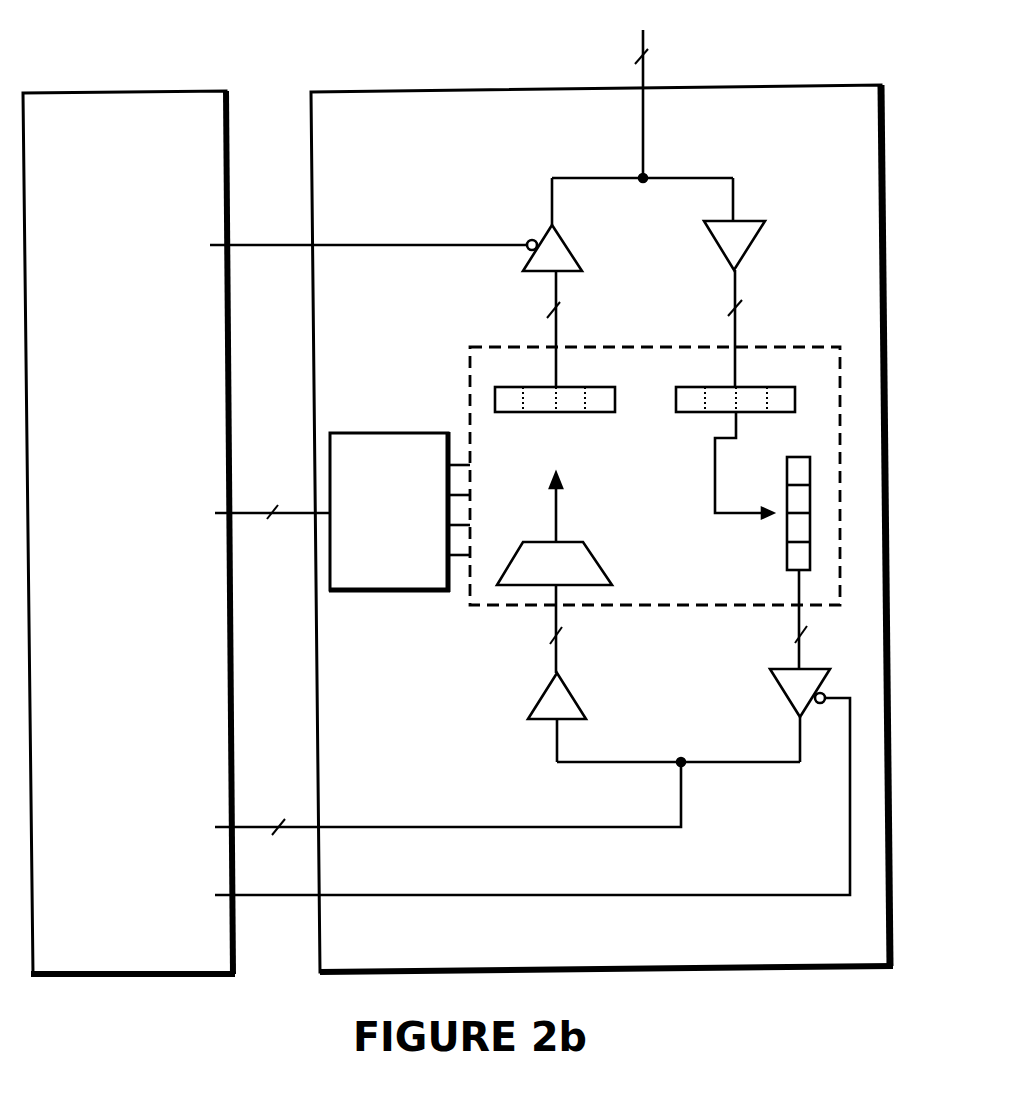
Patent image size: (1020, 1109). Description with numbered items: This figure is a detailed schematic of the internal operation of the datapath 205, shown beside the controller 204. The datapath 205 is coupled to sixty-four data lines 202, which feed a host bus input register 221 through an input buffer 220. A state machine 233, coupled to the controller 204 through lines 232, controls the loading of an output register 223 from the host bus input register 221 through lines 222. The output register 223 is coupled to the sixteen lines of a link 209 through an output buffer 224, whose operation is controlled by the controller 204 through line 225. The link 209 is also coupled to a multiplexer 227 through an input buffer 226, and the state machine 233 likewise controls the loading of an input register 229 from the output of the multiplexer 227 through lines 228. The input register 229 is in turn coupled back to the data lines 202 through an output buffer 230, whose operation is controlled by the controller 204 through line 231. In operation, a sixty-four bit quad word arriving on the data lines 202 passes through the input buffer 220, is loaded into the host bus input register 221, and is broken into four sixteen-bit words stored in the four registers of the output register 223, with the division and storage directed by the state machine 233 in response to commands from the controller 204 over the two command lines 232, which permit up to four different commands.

The data lines 202 is at (642, 94).
The controller 204 is at (143, 194).
The datapath 205 is at (422, 191).
The link 209 is at (486, 799).
The input buffer 220 is at (752, 220).
The host bus input register 221 is at (768, 415).
The lines 222 is at (731, 506).
The output register 223 is at (773, 535).
The output buffer 224 is at (783, 694).
The line 225 is at (511, 803).
The input buffer 226 is at (575, 697).
The multiplexer 227 is at (576, 577).
The lines 228 is at (543, 496).
The input register 229 is at (551, 417).
The output buffer 230 is at (568, 247).
The line 231 is at (346, 247).
The lines 232 is at (250, 506).
The state machine 233 is at (369, 520).